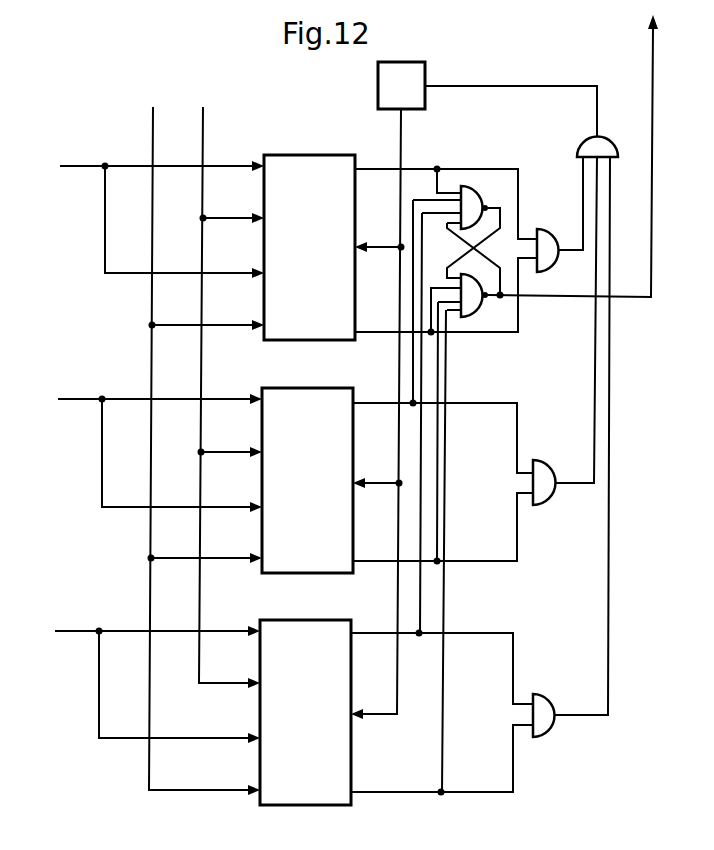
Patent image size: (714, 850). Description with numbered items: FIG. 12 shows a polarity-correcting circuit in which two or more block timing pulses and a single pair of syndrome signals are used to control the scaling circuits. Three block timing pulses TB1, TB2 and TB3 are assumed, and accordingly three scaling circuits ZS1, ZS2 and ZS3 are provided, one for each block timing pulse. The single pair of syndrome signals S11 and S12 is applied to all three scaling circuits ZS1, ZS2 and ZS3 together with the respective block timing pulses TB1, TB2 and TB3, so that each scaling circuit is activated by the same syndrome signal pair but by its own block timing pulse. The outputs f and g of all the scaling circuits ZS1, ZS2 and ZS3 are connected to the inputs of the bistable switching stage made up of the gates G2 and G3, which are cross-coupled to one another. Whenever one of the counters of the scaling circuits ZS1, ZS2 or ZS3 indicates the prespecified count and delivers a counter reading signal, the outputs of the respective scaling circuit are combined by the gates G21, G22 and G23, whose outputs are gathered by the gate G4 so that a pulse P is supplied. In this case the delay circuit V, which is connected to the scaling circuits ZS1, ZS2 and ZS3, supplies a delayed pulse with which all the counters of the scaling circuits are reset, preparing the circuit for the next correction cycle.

The block timing pulse TB1 is at (142, 215).
The block timing pulse TB2 is at (139, 448).
The block timing pulse TB3 is at (136, 680).
The syndrome signal S11 is at (201, 437).
The syndrome signal S12 is at (227, 384).
The scaling circuit ZS1 is at (392, 248).
The scaling circuit ZS2 is at (309, 479).
The scaling circuit ZS3 is at (307, 710).
The delay circuit V is at (474, 390).
The gate G2 is at (459, 401).
The gate G3 is at (468, 507).
The gate G21 is at (556, 227).
The gate G22 is at (547, 490).
The gate G23 is at (549, 722).
The gate G4 is at (580, 146).
The pulse P is at (582, 156).